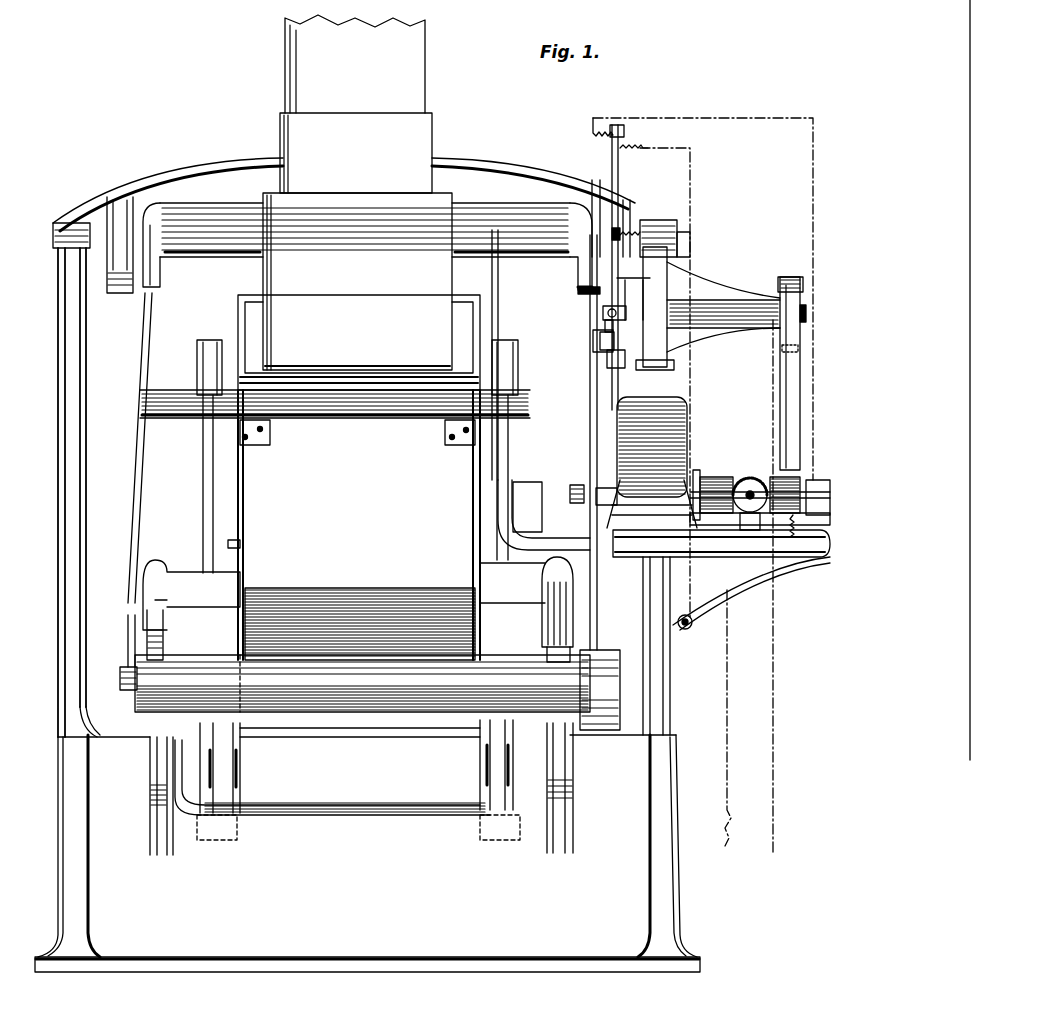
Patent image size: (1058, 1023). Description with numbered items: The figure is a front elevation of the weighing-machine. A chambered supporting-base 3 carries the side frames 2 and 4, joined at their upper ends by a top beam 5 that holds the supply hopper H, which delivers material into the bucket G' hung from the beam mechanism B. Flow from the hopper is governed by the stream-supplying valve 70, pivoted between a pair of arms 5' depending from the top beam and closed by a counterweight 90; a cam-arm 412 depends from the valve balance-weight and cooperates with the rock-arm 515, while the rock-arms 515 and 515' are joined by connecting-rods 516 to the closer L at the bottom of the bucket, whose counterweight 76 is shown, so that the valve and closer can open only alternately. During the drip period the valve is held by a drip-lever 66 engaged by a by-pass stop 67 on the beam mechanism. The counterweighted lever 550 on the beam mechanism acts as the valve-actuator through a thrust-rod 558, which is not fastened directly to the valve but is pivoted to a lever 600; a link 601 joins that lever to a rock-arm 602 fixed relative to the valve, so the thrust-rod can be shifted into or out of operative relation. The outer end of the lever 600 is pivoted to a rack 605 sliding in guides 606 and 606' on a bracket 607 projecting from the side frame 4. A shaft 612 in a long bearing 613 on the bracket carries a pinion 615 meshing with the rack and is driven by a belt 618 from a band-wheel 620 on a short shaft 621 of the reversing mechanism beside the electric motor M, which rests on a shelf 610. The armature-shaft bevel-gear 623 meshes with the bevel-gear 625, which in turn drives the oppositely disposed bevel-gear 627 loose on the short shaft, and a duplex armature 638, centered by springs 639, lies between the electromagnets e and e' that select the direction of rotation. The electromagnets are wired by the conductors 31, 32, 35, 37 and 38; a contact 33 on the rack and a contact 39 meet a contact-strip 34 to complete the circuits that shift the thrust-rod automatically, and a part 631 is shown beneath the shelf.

The side frame 2 is at (60, 538).
The chambered supporting-base 3 is at (367, 853).
The side frame 4 is at (668, 672).
The top beam 5 is at (344, 182).
The arms 5' is at (363, 233).
The conductor 31 is at (774, 627).
The conductor 32 is at (731, 118).
The contact 33 is at (605, 136).
The contact-strip 34 is at (619, 178).
The conductor 35 is at (690, 242).
The conductor 37 is at (730, 680).
The conductor 38 is at (692, 176).
The contact 39 is at (623, 150).
The drip-lever 66 is at (140, 398).
The by-pass stop 67 is at (130, 622).
The stream-supplying valve 70 is at (357, 281).
The counterweight 76 is at (222, 770).
The counterweight 90 is at (483, 212).
The cam-arm 412 is at (492, 274).
The rock-arm 515 is at (335, 391).
The rock-arm 515' is at (218, 392).
The connecting-rods 516 is at (205, 465).
The counterweighted lever 550 is at (592, 668).
The thrust-rod 558 is at (570, 565).
The lever 600 is at (600, 412).
The link 601 is at (593, 368).
The rock-arm 602 is at (580, 265).
The rack 605 is at (613, 344).
The guide 606 is at (589, 356).
The guide 606' is at (652, 221).
The bracket 607 is at (660, 280).
The shelf 610 is at (810, 560).
The shaft 612 is at (603, 312).
The long bearing 613 is at (732, 304).
The pinion 615 is at (605, 327).
The belt 618 is at (786, 374).
The band-wheel 620 is at (783, 350).
The short shaft 621 is at (574, 492).
The bevel-gear 623 is at (728, 475).
The bevel-gear 625 is at (749, 478).
The bevel-gear 627 is at (772, 478).
The bracket 631 is at (750, 558).
The duplex armature 638 is at (748, 500).
The springs 639 is at (723, 520).
The beam mechanism B is at (362, 683).
The frame G' is at (354, 477).
The supply hopper H is at (356, 104).
The closer L is at (300, 805).
The electric motor M is at (646, 462).
The electromagnet e is at (815, 481).
The electromagnet e' is at (703, 481).